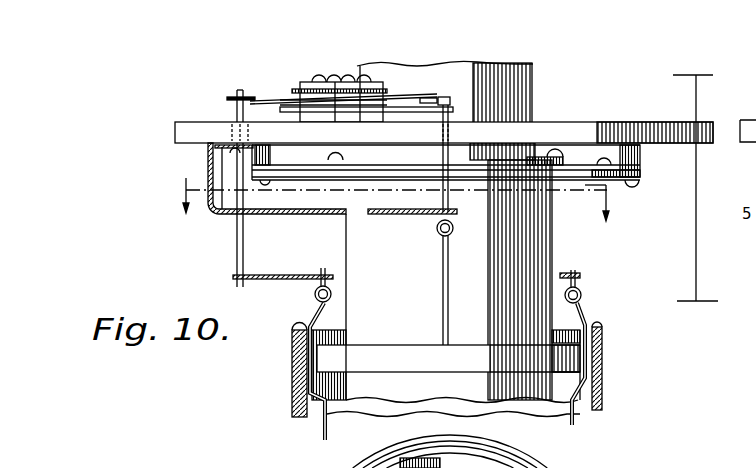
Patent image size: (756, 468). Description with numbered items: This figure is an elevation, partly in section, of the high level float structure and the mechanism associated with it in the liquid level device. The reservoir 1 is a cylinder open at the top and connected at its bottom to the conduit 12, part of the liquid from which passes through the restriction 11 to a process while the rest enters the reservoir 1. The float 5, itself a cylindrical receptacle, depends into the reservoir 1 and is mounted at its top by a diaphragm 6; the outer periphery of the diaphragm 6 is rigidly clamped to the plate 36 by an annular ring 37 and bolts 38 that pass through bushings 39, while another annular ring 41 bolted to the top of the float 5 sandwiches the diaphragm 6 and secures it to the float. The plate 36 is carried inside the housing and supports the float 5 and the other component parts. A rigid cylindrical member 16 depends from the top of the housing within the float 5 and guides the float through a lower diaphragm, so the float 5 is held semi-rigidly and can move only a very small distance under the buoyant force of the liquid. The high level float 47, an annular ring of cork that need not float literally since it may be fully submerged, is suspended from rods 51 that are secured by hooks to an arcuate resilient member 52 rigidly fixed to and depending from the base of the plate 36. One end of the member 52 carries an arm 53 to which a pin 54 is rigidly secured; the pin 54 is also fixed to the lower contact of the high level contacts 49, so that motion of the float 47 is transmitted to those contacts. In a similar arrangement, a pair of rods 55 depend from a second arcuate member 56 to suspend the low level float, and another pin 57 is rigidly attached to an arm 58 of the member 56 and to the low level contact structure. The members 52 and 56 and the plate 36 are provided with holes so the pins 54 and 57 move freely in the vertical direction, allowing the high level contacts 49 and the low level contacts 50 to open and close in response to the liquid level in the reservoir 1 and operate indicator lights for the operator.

The reservoir 1 is at (603, 387).
The float 5 is at (553, 228).
The diaphragm 6 is at (609, 172).
The restriction 11 is at (394, 199).
The conduit 12 is at (695, 191).
The rigid cylindrical member 16 is at (534, 85).
The plate 36 is at (586, 122).
The annular ring 37 is at (641, 168).
The bolts 38 is at (271, 181).
The bushings 39 is at (271, 153).
The annular ring 41 is at (563, 156).
The high level float 47 is at (389, 365).
The high level contacts 49 is at (395, 100).
The low level contacts 50 is at (262, 98).
The rods 51 is at (449, 271).
The arcuate resilient member 52 is at (268, 215).
The arm 53 is at (439, 214).
The pin 54 is at (454, 112).
The rods 55 is at (322, 428).
The second arcuate member 56 is at (333, 265).
The pin 57 is at (237, 239).
The arm 58 is at (282, 280).